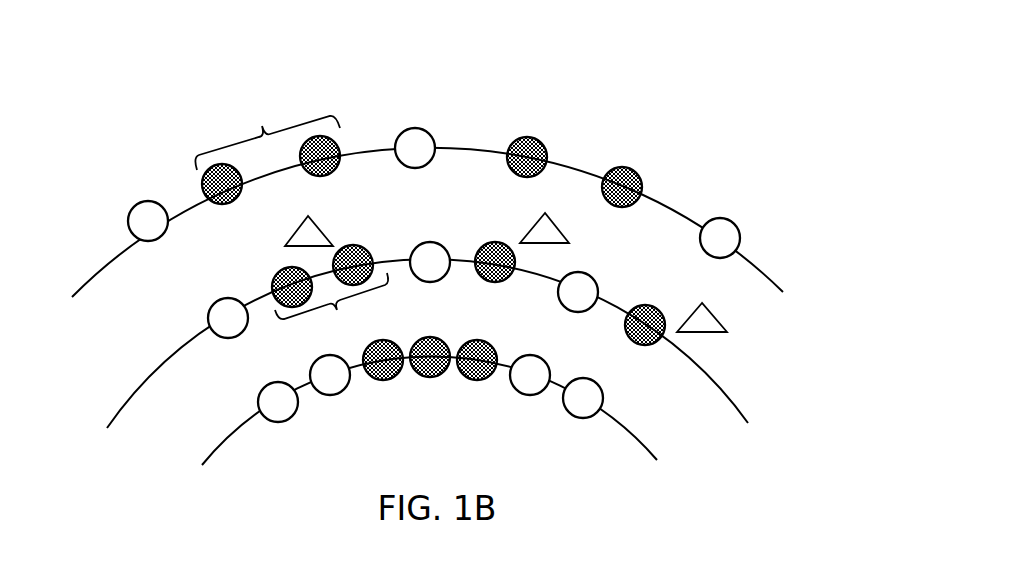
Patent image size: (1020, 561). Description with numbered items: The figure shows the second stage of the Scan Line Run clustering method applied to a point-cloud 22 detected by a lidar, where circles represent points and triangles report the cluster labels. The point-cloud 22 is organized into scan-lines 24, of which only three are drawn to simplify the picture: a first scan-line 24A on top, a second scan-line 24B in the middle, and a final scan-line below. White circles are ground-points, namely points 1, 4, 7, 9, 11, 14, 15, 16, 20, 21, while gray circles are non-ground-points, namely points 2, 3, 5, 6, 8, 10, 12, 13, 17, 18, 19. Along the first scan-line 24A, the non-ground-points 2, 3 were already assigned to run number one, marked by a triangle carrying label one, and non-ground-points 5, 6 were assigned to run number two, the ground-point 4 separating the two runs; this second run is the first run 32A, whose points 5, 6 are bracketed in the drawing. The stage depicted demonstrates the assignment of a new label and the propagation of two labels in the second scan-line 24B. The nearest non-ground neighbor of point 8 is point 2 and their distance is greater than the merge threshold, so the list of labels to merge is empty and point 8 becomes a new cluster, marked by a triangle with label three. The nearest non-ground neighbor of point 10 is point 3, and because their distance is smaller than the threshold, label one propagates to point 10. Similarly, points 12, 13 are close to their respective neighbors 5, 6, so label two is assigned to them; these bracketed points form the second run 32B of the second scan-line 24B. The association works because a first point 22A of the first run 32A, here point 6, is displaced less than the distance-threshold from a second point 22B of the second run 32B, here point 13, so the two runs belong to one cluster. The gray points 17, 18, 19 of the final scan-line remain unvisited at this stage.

The ground-point 1 is at (720, 238).
The non-ground-point 2 is at (622, 187).
The non-ground-point 3 is at (527, 157).
The ground-point 4 is at (415, 148).
The non-ground-point 5 is at (320, 156).
The non-ground-point 6 is at (222, 184).
The ground-point 7 is at (148, 221).
The non-ground-point 8 is at (645, 325).
The ground-point 9 is at (578, 292).
The non-ground-point 10 is at (495, 262).
The ground-point 11 is at (430, 262).
The non-ground-point 12 is at (353, 265).
The non-ground-point 13 is at (292, 287).
The ground-point 14 is at (228, 318).
The ground-point 15 is at (583, 398).
The ground-point 16 is at (530, 375).
The non-ground-point 17 is at (477, 360).
The non-ground-point 18 is at (430, 357).
The non-ground-point 19 is at (383, 360).
The ground-point 20 is at (330, 375).
The ground-point 21 is at (278, 402).
The point-cloud 22 is at (681, 74).
The first point 22A is at (278, 176).
The second point 22B is at (265, 276).
The scan-lines 24 is at (763, 269).
The first scan-line 24A is at (467, 148).
The second scan-line 24B is at (180, 350).
The first run 32A is at (267, 135).
The second run 32B is at (331, 308).